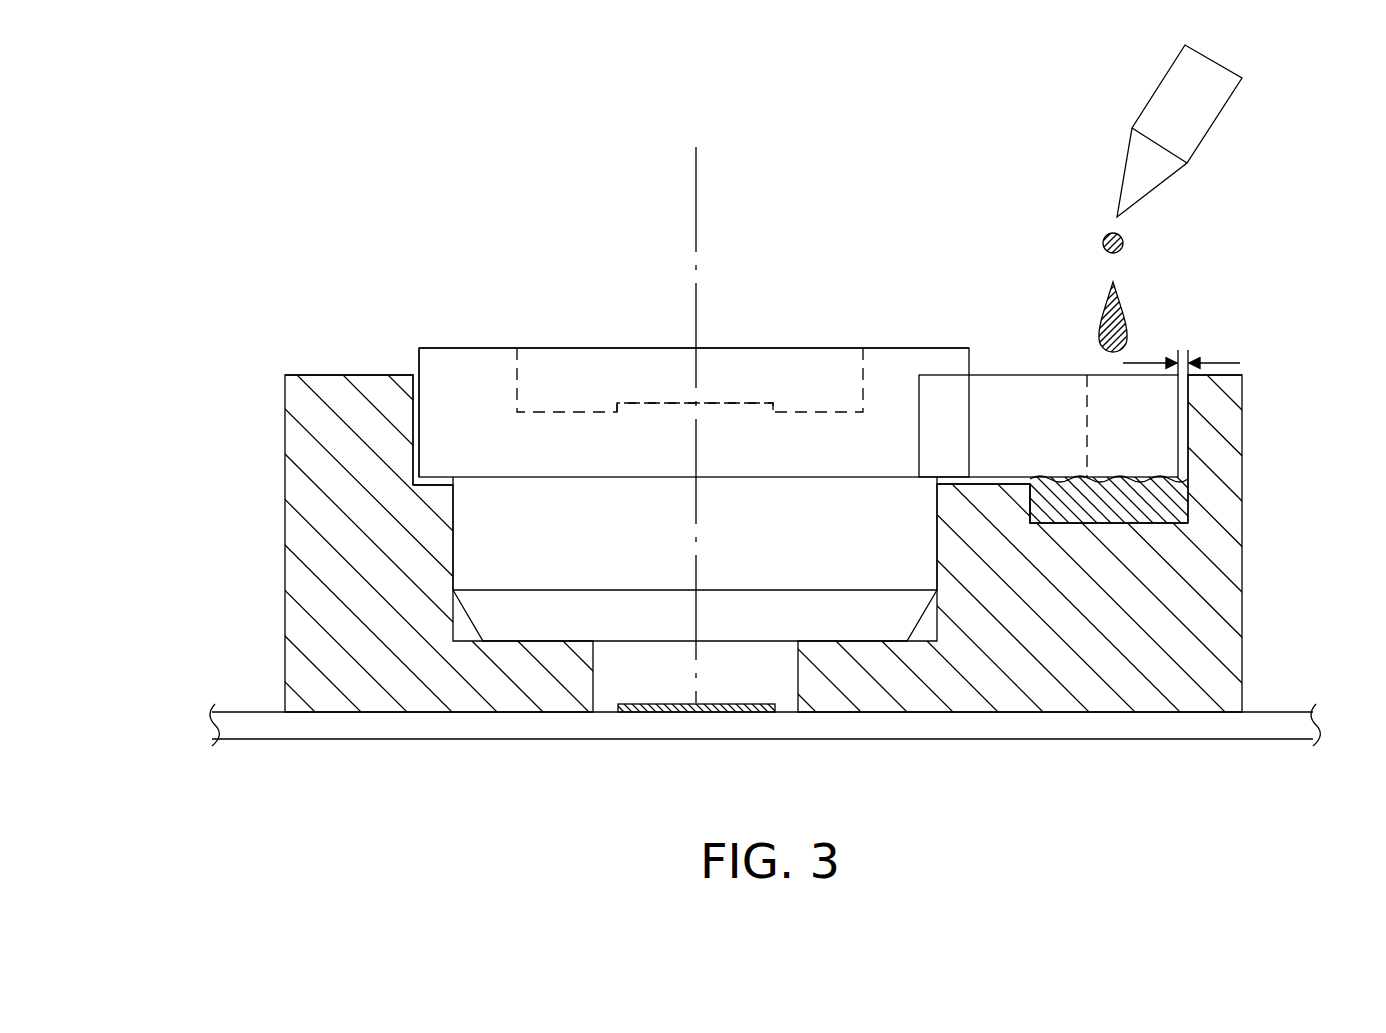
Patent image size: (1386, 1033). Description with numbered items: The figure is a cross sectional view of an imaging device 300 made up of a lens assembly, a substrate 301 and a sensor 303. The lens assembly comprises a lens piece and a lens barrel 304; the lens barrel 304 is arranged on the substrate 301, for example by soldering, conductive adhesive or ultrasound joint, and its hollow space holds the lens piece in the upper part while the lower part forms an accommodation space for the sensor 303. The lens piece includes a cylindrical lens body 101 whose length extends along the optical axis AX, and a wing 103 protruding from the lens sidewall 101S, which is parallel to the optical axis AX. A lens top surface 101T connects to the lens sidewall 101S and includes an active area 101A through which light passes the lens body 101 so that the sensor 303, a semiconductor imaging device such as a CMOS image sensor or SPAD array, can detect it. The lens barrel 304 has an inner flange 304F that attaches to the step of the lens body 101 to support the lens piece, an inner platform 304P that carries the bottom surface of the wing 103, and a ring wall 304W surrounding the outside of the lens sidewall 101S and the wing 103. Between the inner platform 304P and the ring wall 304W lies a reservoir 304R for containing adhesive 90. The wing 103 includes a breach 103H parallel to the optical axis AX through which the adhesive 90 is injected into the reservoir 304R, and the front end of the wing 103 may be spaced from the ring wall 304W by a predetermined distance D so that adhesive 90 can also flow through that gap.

The imaging device 300 is at (256, 206).
The optical axis AX is at (693, 408).
The lens body 101 is at (898, 342).
The lens top surface 101T is at (478, 348).
The lens sidewall 101S is at (477, 400).
The active area 101A is at (717, 403).
The wing 103 is at (989, 368).
The breach 103H is at (1108, 402).
The adhesive 90 is at (1105, 327).
The predetermined distance D is at (1181, 347).
The lens barrel 304 is at (283, 627).
The ring wall 304W is at (307, 412).
The inner flange 304F is at (425, 490).
The reservoir 304R is at (1167, 505).
The inner platform 304P is at (1015, 518).
The substrate 301 is at (1275, 712).
The sensor 303 is at (642, 712).